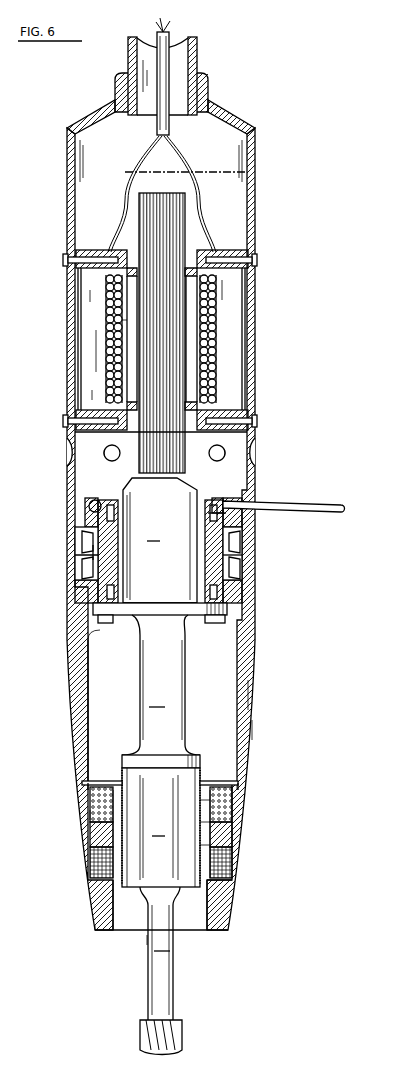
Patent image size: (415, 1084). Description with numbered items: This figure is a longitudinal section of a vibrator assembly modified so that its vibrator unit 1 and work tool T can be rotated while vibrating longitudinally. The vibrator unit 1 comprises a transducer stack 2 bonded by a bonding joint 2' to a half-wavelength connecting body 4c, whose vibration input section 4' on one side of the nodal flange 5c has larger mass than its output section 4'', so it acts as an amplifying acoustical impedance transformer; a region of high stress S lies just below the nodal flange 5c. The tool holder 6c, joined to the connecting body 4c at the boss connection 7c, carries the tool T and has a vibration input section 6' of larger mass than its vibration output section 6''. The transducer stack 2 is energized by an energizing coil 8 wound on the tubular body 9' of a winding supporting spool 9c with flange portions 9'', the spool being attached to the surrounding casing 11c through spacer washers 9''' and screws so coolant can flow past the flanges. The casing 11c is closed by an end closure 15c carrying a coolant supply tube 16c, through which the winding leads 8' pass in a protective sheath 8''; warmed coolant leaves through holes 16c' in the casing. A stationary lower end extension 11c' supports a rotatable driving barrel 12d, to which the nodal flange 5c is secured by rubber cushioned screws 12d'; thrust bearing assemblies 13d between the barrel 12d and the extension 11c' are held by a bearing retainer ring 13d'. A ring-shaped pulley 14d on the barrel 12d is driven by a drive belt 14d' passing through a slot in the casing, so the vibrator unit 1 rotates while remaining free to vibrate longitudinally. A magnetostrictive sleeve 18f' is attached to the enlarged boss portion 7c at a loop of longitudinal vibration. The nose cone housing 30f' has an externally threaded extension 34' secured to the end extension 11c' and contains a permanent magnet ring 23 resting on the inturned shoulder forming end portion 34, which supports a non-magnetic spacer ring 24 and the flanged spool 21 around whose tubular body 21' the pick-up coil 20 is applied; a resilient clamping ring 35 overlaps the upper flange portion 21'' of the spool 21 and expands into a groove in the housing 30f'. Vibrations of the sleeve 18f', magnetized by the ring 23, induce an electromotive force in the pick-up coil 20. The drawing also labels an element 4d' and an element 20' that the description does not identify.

The vibrator unit 1 is at (135, 868).
The transducer stack 2 is at (104, 333).
The bonding joint 2' is at (136, 457).
The vibration input section 4' is at (160, 540).
The output section 4'' is at (161, 685).
The connecting body 4c is at (118, 490).
The ball 4d' is at (51, 508).
The nodal flange 5c is at (158, 612).
The vibration input section 6' is at (161, 827).
The vibration output section 6'' is at (160, 953).
The tool holder 6c is at (152, 870).
The boss connection 7c is at (156, 766).
The energizing coil 8 is at (74, 318).
The winding leads 8' is at (146, 131).
The protective sheath 8'' is at (194, 83).
The tubular body 9' is at (154, 339).
The flange portions 9'' is at (157, 340).
The spacer washers 9''' is at (156, 328).
The winding supporting spool 9c is at (224, 282).
The casing 11c is at (182, 515).
The lower end extension 11c' is at (180, 662).
The rotatable driving barrel 12d is at (129, 550).
The rubber cushioned screws 12d' is at (119, 622).
The thrust bearing assemblies 13d is at (160, 550).
The bearing retainer ring 13d' is at (197, 641).
The ring-shaped pulley 14d is at (256, 493).
The drive belt 14d' is at (285, 494).
The end closure 15c is at (220, 108).
The coolant supply tube 16c is at (194, 76).
The holes 16c' is at (159, 448).
The magnetostrictive sleeve 18f' is at (264, 893).
The pick-up coil 20 is at (153, 804).
The coil lead 20' is at (53, 815).
The flanged spool 21 is at (127, 798).
The tubular body 21' is at (255, 822).
The upper flange portion 21'' is at (208, 830).
The permanent magnet ring 23 is at (90, 870).
The spacer ring 24 is at (90, 840).
The nose cone housing 30f' is at (282, 729).
The inturned shoulder forming end portion 34 is at (186, 905).
The externally threaded extension 34' is at (274, 695).
The clamping ring 35 is at (232, 782).
The region of high stress S is at (120, 778).
The work tool T is at (140, 1034).